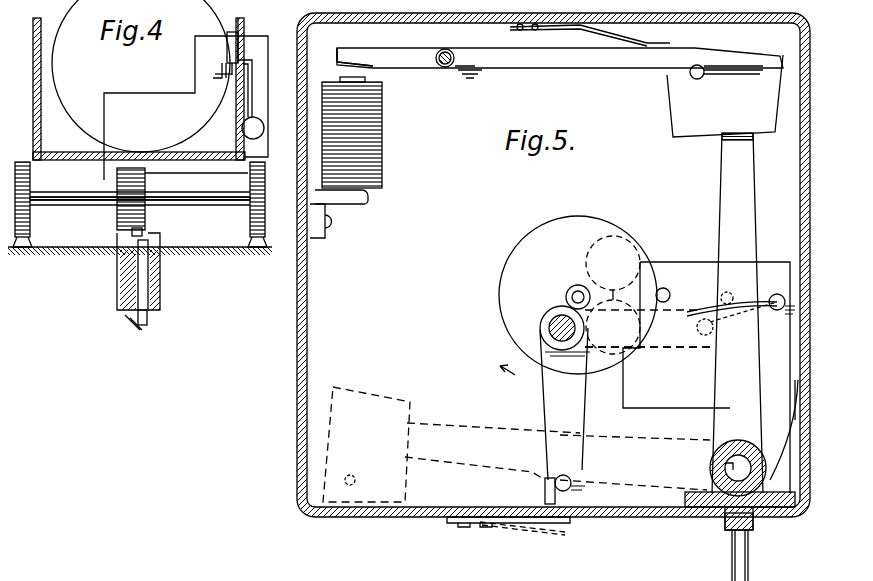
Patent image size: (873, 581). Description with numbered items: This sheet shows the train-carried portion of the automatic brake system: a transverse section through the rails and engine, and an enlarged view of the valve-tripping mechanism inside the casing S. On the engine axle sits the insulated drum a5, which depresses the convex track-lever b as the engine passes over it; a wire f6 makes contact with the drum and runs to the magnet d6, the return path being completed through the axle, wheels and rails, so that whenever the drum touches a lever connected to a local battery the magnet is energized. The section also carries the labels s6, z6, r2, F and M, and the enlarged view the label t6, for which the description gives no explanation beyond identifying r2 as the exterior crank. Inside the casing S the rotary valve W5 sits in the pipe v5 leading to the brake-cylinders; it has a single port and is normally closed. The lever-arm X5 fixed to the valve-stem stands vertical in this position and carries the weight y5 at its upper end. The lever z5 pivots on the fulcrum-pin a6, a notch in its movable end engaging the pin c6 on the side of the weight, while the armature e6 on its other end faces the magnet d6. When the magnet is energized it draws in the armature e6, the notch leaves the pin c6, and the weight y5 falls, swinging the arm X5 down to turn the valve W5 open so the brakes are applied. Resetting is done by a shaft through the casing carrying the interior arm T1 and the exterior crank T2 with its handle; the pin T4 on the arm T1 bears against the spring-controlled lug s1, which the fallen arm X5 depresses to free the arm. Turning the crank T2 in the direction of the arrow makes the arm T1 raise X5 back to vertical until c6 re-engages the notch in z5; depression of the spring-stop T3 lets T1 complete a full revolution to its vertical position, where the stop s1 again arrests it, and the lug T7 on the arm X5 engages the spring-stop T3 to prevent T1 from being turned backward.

In FIG. 4, the stepped casing wall s6 is at (104, 130).
In FIG. 4, the contact bar z6 is at (233, 30).
In FIG. 4, the exterior crank r2 is at (218, 77).
In FIG. 4, the pipe v5 is at (250, 108).
In FIG. 5, the pipe v5 is at (731, 555).
In FIG. 4, the drum a5 is at (146, 212).
In FIG. 4, the wire f6 is at (184, 173).
In FIG. 4, the track-lever b is at (131, 230).
In FIG. 4, the frame F is at (149, 270).
In FIG. 4, the motor M is at (148, 320).
In FIG. 5, the magnet d6 is at (360, 170).
In FIG. 5, the lever z5 is at (566, 60).
In FIG. 5, the armature e6 is at (350, 58).
In FIG. 5, the fulcrum-pin a6 is at (442, 68).
In FIG. 5, the spring blade t6 is at (633, 44).
In FIG. 5, the pin c6 is at (694, 78).
In FIG. 5, the weight y5 is at (683, 122).
In FIG. 5, the interior crank T1 is at (565, 393).
In FIG. 5, the pin T4 is at (573, 490).
In FIG. 5, the spring-controlled lug s1 is at (545, 495).
In FIG. 5, the casing S is at (413, 325).
In FIG. 5, the spring-stop T3 is at (703, 312).
In FIG. 5, the lug T7 is at (729, 292).
In FIG. 5, the exterior crank T2 is at (661, 348).
In FIG. 5, the lever-arm X5 is at (722, 374).
In FIG. 5, the valve W5 is at (710, 470).